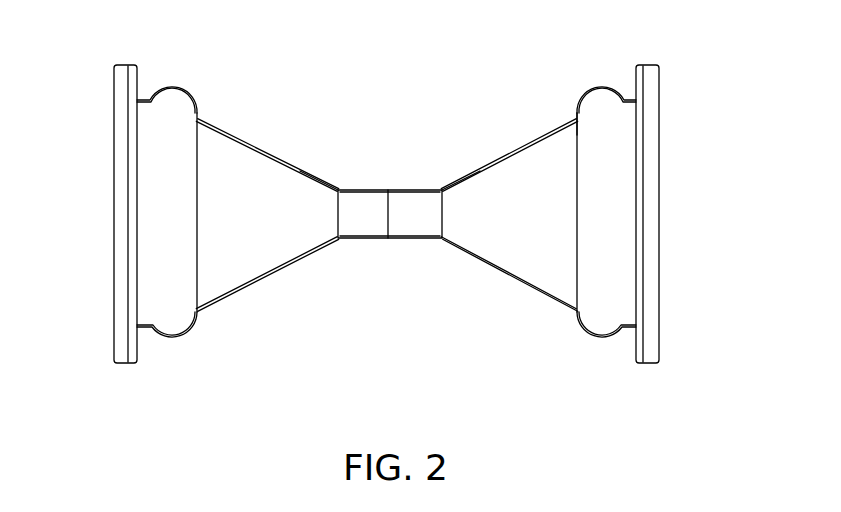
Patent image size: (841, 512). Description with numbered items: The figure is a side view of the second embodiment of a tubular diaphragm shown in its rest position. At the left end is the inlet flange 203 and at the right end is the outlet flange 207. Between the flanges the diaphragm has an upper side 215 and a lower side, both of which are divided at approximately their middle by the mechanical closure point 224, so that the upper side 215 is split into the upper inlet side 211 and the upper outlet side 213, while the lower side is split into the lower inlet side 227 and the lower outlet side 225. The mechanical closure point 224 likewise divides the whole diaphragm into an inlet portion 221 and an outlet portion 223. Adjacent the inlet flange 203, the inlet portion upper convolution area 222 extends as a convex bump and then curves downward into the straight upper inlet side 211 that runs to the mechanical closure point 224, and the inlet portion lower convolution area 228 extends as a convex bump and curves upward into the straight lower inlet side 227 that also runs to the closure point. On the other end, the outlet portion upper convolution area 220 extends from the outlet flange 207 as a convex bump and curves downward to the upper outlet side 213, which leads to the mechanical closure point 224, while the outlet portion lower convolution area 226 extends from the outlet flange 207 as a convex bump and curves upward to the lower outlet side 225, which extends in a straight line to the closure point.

The inlet flange 203 is at (120, 127).
The outlet flange 207 is at (650, 316).
The upper inlet side 211 is at (243, 140).
The upper outlet side 213 is at (563, 124).
The upper side 215 is at (520, 153).
The outlet portion upper convolution area 220 is at (605, 92).
The inlet portion 221 is at (303, 170).
The inlet portion upper convolution area 222 is at (167, 92).
The outlet portion 223 is at (480, 170).
The mechanical closure point 224 is at (390, 190).
The lower outlet side 225 is at (512, 282).
The outlet portion lower convolution area 226 is at (598, 340).
The lower inlet side 227 is at (250, 290).
The inlet portion lower convolution area 228 is at (172, 340).